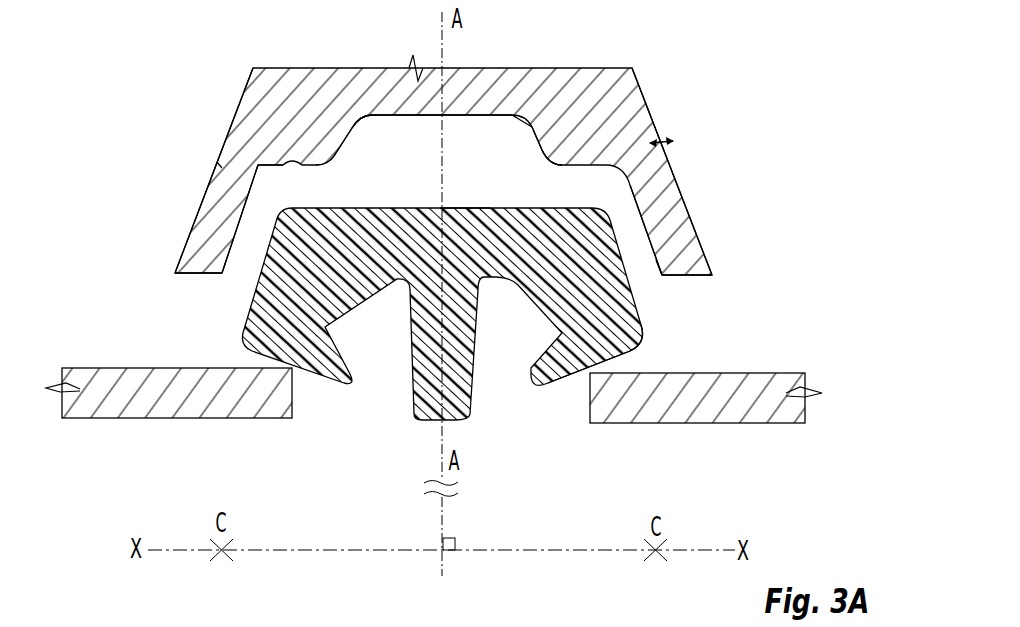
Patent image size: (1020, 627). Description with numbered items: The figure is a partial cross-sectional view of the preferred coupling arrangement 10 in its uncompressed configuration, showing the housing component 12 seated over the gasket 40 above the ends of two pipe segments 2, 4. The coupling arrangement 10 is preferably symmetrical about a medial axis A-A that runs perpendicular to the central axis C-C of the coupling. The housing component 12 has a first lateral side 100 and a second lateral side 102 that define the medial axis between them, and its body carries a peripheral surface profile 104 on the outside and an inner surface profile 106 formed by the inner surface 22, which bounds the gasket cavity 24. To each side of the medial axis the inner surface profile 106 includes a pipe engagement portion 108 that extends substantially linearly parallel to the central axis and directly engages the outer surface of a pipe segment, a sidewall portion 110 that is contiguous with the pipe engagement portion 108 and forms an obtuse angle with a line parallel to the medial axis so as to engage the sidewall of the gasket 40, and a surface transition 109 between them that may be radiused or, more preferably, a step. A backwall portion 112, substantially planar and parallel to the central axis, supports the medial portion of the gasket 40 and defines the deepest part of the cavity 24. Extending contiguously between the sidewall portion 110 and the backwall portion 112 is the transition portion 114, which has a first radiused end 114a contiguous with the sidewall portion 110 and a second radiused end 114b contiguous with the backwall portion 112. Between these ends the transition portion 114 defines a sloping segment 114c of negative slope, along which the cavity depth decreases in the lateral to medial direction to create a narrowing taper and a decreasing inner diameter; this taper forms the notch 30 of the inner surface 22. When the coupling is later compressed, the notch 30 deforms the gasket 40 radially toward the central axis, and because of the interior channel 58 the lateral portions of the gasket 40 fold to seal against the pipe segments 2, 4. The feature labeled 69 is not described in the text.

The coupling arrangement 10 is at (748, 80).
The housing component 12 is at (558, 76).
The notch 30 is at (324, 162).
The backwall portion 112 is at (489, 113).
The inner surface 22 is at (405, 118).
The gasket cavity 24 is at (467, 157).
The sloping segment 114c is at (272, 158).
The first radiused end 114a is at (218, 166).
The second lateral side 102 is at (199, 207).
The transition portion 114 is at (344, 145).
The second radiused end 114b is at (370, 118).
The peripheral surface profile 104 is at (463, 208).
The inner surface profile 106 is at (545, 164).
The first lateral side 100 is at (681, 190).
The sidewall portion 110 is at (243, 221).
The surface transition 109 is at (224, 283).
The pipe engagement portion 108 is at (706, 283).
The gap 69 is at (666, 286).
The interior channel 58 is at (366, 337).
The gasket 40 is at (640, 339).
The pipe segment 2 is at (140, 368).
The pipe segment 4 is at (756, 373).